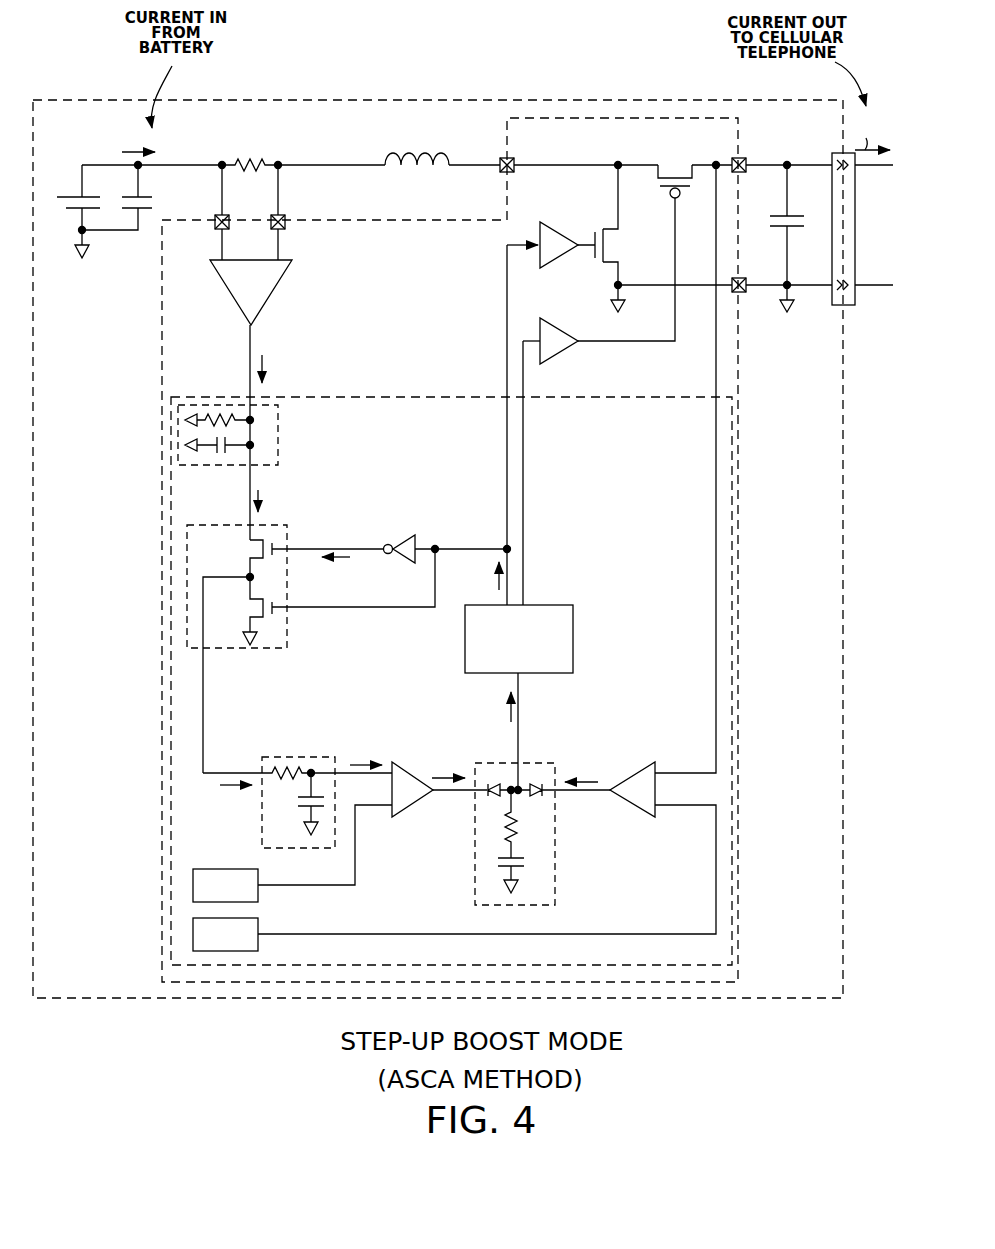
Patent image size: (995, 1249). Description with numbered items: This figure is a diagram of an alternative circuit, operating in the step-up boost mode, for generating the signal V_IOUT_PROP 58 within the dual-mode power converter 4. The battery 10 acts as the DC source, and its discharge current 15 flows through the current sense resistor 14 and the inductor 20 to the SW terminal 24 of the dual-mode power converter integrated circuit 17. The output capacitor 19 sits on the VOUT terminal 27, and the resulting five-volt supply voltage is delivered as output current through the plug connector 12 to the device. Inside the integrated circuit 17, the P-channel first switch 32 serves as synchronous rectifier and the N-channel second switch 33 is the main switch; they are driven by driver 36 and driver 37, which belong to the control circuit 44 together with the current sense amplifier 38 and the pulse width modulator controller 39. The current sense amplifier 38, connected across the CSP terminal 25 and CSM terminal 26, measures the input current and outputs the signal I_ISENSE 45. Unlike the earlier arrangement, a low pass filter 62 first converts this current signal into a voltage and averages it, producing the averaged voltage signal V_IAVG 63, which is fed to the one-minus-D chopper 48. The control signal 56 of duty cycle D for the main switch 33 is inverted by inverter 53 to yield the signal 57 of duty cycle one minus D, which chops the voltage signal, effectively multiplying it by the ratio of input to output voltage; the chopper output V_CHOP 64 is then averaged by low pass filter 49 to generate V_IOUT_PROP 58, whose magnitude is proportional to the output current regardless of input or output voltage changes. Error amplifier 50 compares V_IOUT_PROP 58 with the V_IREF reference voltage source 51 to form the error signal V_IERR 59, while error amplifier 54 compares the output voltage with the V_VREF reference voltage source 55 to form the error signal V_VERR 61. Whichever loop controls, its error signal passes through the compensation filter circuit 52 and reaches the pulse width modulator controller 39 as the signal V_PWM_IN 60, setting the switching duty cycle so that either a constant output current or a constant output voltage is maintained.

The dual-mode power converter 4 is at (381, 98).
The battery 10 is at (91, 220).
The plug connector 12 is at (834, 310).
The current sense resistor 14 is at (257, 158).
The discharge current 15 is at (137, 147).
The dual-mode power converter integrated circuit 17 is at (740, 605).
The output capacitor 19 is at (778, 228).
The inductor 20 is at (435, 150).
The second terminal SW 24 is at (504, 176).
The third terminal CSP 25 is at (274, 214).
The fourth terminal CSM 26 is at (229, 211).
The fifth terminal VOUT 27 is at (734, 157).
The first switch Q1 32 is at (674, 168).
The second switch Q2 33 is at (614, 248).
The driver for switch Q1 36 is at (560, 354).
The driver for switch Q2 37 is at (563, 262).
The current sense amplifier 38 is at (271, 302).
The pulse width modulator controller 39 is at (519, 697).
The control circuit 44 is at (434, 395).
The signal I_ISENSE 45 is at (268, 372).
The 1-D chopper 48 is at (287, 533).
The low pass filter 49 is at (291, 756).
The error amplifier 50 is at (407, 810).
The V_IREF reference voltage source 51 is at (213, 868).
The compensation filter circuit 52 is at (556, 888).
The inverter 53 is at (402, 563).
The error amplifier 54 is at (633, 769).
The V_VREF reference voltage source 55 is at (262, 923).
The control signal 56 is at (496, 580).
The signal having a duty cycle of (1-D) 57 is at (347, 554).
The signal V_IOUT_PROP 58 is at (364, 762).
The error signal V_IERR 59 is at (452, 774).
The signal V_PWM_IN 60 is at (506, 711).
The error signal V_VERR 61 is at (592, 780).
The low pass filter 62 is at (280, 436).
The averaged voltage signal V_IAVG 63 is at (268, 505).
The signal V_CHOP 64 is at (226, 788).